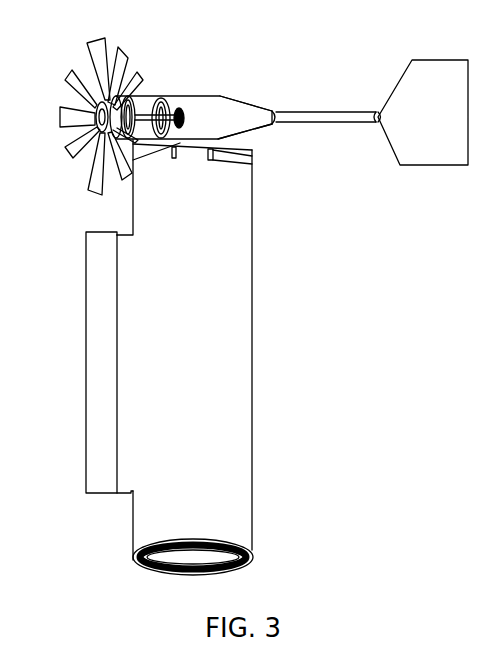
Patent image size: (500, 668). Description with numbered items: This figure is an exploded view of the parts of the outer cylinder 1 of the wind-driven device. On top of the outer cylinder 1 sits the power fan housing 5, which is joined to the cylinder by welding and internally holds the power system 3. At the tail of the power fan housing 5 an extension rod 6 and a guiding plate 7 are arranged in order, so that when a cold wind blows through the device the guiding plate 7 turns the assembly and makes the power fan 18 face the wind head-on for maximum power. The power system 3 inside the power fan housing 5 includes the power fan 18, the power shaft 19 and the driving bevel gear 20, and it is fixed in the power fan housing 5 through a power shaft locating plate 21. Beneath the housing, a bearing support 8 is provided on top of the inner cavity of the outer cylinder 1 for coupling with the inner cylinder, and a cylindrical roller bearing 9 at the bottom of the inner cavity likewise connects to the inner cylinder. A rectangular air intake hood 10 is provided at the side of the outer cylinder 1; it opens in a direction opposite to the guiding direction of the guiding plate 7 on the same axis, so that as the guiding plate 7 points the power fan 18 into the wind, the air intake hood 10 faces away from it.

The outer cylinder 1 is at (226, 350).
The power system 3 is at (269, 82).
The power fan housing 5 is at (194, 81).
The extension rod 6 is at (327, 81).
The guiding plate 7 is at (422, 141).
The bearing support 8 is at (221, 177).
The cylindrical roller bearing 9 is at (164, 565).
The rectangular air intake hood 10 is at (86, 362).
The power fan 18 is at (82, 116).
The power shaft 19 is at (173, 78).
The driving bevel gear 20 is at (198, 89).
The power shaft locating plate 21 is at (177, 78).